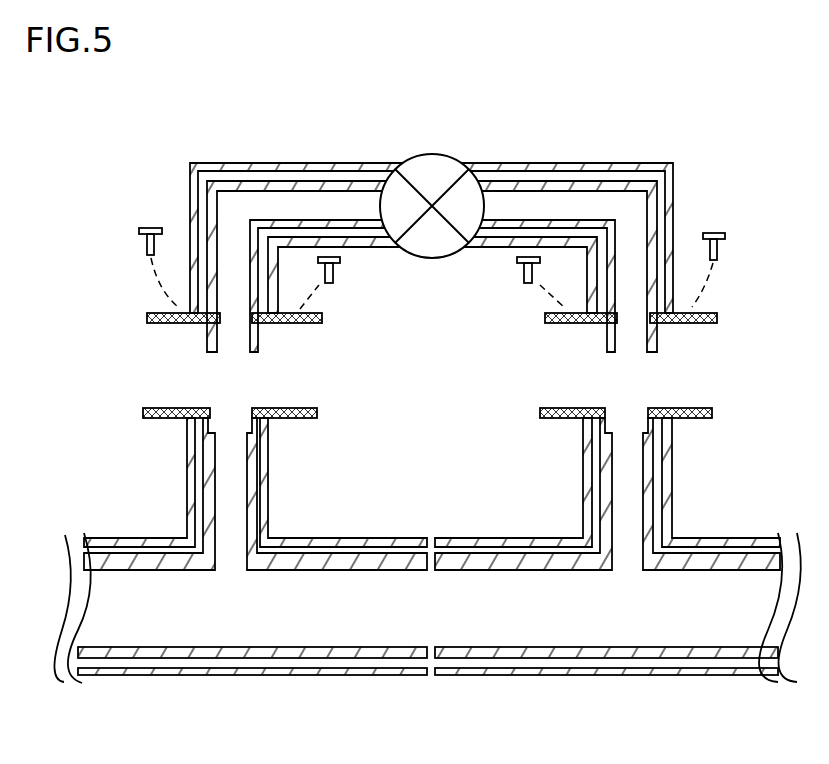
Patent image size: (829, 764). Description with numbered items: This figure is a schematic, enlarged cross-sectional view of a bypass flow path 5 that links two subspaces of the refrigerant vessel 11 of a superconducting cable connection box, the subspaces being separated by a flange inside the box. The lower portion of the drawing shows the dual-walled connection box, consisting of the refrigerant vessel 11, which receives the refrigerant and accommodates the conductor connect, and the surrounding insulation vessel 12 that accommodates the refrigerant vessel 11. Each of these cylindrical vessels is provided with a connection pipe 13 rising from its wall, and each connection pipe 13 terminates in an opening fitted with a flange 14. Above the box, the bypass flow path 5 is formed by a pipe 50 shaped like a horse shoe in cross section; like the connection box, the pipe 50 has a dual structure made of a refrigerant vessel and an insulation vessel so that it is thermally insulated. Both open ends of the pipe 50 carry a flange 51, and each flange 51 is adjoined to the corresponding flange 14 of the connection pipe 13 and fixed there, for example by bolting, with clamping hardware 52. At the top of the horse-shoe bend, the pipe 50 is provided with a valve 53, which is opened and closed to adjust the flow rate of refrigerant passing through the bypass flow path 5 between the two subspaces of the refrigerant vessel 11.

The bypass flow path 5 is at (704, 181).
The pipe 50 is at (565, 161).
The flange 51 is at (718, 317).
The clamping hardware 52 is at (718, 231).
The valve 53 is at (432, 165).
The refrigerant vessel 11 is at (201, 655).
The insulation vessel 12 is at (283, 669).
The connection pipe 13 is at (696, 423).
The flange 14 is at (713, 413).